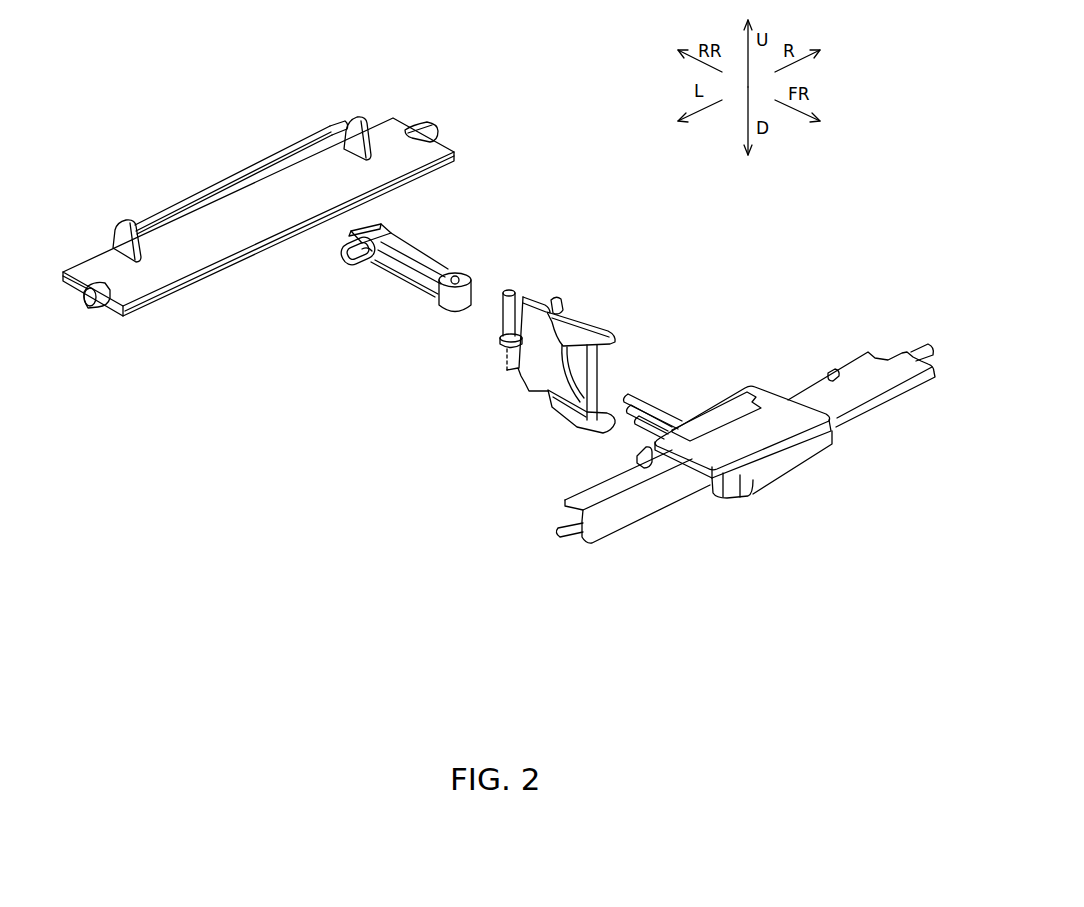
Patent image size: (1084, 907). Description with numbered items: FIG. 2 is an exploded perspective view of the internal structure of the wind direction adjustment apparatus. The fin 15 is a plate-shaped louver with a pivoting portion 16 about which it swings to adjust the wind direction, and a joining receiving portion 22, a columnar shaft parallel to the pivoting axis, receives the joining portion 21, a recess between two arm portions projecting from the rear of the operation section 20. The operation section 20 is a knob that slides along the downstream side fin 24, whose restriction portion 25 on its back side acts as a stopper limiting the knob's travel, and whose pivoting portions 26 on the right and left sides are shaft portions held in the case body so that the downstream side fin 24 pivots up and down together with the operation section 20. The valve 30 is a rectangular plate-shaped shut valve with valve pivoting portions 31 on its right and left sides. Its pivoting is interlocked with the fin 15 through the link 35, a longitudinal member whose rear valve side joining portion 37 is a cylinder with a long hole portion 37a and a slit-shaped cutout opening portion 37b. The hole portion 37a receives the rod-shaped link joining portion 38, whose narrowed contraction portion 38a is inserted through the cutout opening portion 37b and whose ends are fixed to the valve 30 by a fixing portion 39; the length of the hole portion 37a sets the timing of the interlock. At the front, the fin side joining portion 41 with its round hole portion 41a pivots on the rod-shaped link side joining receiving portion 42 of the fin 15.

The fin 15 is at (522, 381).
The pivoting portion 16 is at (557, 299).
The operation section 20 is at (793, 475).
The joining portion 21 is at (655, 399).
The joining receiving portion 22 is at (600, 378).
The downstream side fin 24 is at (855, 395).
The restriction portion 25 is at (829, 373).
The pivoting portion 26 is at (923, 350).
The valve 30 is at (235, 242).
The valve pivoting portion 31 is at (90, 305).
The link 35 is at (416, 255).
The valve side joining portion 37 is at (345, 259).
The hole portion 37a is at (358, 266).
The cutout opening portion 37b is at (383, 229).
The link joining portion 38 is at (212, 191).
The contraction portion 38a is at (333, 122).
The fixing portion 39 is at (122, 236).
The fin side joining portion 41 is at (453, 314).
The hole portion 41a is at (421, 294).
The link side joining receiving portion 42 is at (509, 289).